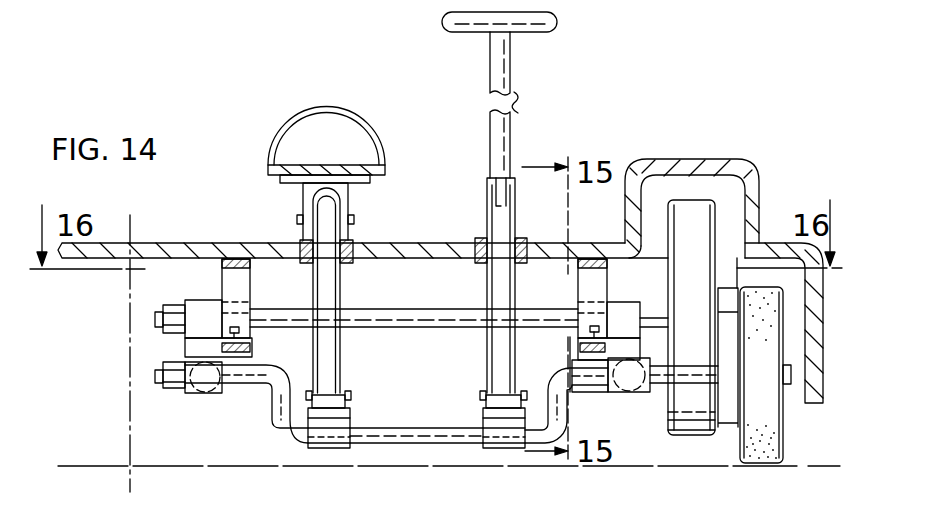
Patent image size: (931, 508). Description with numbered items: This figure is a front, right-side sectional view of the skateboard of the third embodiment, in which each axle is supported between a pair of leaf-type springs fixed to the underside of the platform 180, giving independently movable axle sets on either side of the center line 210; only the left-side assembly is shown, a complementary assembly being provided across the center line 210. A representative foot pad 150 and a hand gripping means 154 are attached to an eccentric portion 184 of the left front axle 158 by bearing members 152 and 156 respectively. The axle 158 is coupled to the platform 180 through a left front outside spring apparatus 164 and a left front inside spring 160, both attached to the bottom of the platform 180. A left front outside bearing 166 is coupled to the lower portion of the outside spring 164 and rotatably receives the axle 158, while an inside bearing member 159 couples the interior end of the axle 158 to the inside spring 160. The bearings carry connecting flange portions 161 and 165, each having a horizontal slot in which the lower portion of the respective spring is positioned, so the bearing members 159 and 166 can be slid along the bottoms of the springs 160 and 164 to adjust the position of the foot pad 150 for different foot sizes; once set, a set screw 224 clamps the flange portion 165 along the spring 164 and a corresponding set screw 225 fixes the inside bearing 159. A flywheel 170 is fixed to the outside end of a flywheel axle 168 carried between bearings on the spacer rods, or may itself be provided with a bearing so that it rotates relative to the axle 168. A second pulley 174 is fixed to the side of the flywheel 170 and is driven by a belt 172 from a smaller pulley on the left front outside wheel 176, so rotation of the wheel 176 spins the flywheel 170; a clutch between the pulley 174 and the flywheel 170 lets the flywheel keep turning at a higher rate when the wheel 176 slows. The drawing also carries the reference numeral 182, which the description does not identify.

The foot pad 150 is at (272, 144).
The bearing member 152 is at (346, 411).
The hand gripping means 154 is at (516, 130).
The bearing member 156 is at (484, 413).
The left front axle 158 is at (251, 389).
The inside bearing member 159 is at (207, 390).
The left front inside spring 160 is at (207, 258).
The connecting flange portion 161 is at (252, 346).
The left front outside spring apparatus 164 is at (607, 288).
The connecting flange portion 165 is at (569, 341).
The left front outside bearing 166 is at (612, 394).
The flywheel axle 168 is at (410, 302).
The flywheel 170 is at (713, 207).
The belt 172 is at (728, 438).
The second pulley 174 is at (752, 242).
The left front outside wheel 176 is at (750, 464).
The platform 180 is at (142, 242).
The housing 182 is at (690, 159).
The eccentric portion 184 is at (378, 444).
The center line 210 is at (128, 308).
The set screw 224 is at (592, 325).
The set screw 225 is at (240, 326).